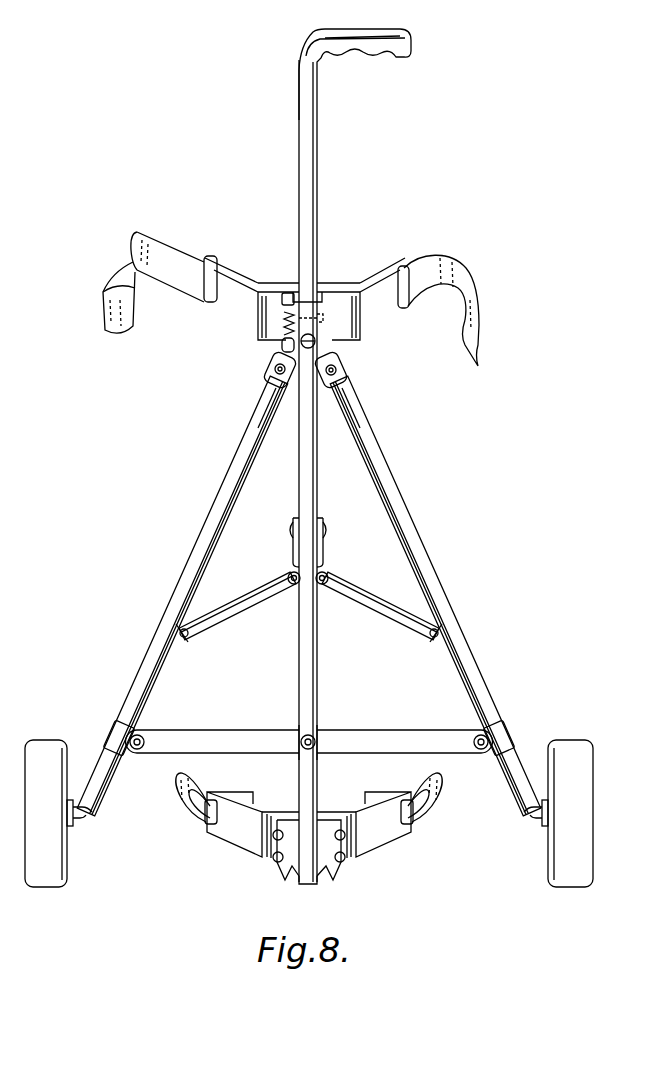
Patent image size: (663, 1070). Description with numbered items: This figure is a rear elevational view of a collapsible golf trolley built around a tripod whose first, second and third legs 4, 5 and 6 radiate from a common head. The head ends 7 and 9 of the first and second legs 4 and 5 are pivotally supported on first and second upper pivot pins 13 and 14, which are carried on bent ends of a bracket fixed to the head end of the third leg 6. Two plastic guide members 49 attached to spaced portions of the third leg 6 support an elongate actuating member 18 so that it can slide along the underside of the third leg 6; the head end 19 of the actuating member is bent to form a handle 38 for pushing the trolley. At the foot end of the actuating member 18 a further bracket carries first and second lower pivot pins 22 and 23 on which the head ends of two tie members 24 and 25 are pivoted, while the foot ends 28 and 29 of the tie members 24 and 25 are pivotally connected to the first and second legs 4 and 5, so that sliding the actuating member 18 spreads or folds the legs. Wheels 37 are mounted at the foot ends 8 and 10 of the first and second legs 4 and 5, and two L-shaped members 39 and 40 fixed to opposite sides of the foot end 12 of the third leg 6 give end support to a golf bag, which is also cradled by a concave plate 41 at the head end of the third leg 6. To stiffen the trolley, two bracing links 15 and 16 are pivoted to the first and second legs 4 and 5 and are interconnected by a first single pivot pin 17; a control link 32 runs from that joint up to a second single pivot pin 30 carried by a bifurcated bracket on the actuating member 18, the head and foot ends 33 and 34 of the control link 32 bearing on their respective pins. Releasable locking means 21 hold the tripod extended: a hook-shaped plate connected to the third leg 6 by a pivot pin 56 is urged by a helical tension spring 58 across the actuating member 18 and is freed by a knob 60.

The first leg 4 is at (212, 518).
The second leg 5 is at (398, 500).
The third leg 6 is at (299, 773).
The head end of the first leg 7 is at (285, 392).
The foot end of the first leg 8 is at (96, 812).
The head end of the second leg 9 is at (335, 392).
The foot end of the second leg 10 is at (520, 810).
The foot end of the third leg 12 is at (306, 884).
The first upper pivot pin 13 is at (272, 378).
The second upper pivot pin 14 is at (342, 378).
The bracing link 15 is at (220, 740).
The bracing link 16 is at (380, 740).
The first single pivot pin 17 is at (317, 736).
The actuating member 18 is at (299, 235).
The head end of the actuating member 19 is at (297, 70).
The releasable locking means 21 is at (268, 308).
The first lower pivot pin 22 is at (288, 574).
The second lower pivot pin 23 is at (330, 572).
The tie member 24 is at (212, 606).
The tie member 25 is at (404, 606).
The foot end of the tie member 28 is at (180, 626).
The foot end of the tie member 29 is at (436, 628).
The second single pivot pin 30 is at (318, 348).
The control link 32 is at (299, 483).
The head end of the control link 33 is at (340, 336).
The foot end of the control link 34 is at (299, 726).
The wheels 37 is at (40, 750).
The handle 38 is at (400, 50).
The L-shaped member 39 is at (276, 868).
The L-shaped member 40 is at (342, 868).
The concave plate 41 is at (392, 274).
The guide members 49 is at (322, 282).
The pivot pin 56 is at (282, 322).
The helical tension spring 58 is at (282, 347).
The knob 60 is at (286, 293).